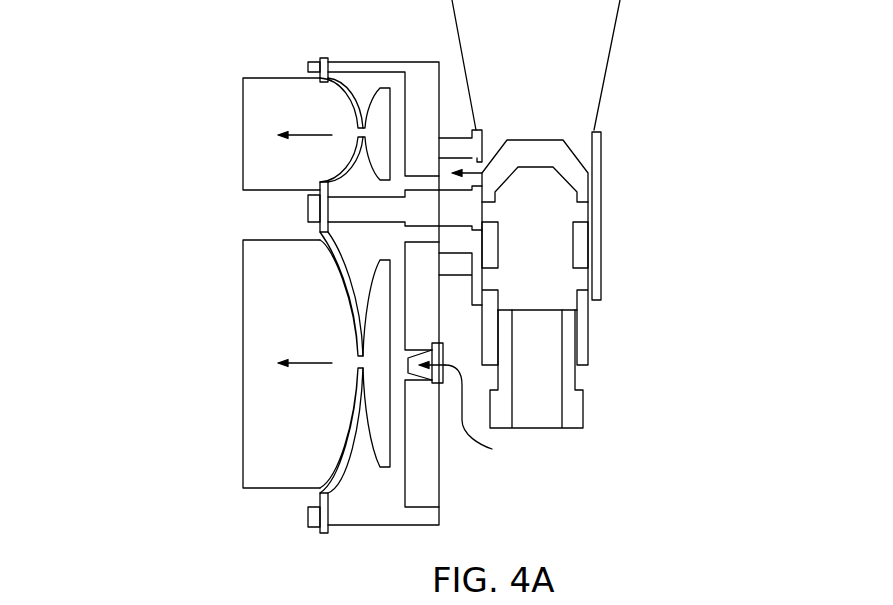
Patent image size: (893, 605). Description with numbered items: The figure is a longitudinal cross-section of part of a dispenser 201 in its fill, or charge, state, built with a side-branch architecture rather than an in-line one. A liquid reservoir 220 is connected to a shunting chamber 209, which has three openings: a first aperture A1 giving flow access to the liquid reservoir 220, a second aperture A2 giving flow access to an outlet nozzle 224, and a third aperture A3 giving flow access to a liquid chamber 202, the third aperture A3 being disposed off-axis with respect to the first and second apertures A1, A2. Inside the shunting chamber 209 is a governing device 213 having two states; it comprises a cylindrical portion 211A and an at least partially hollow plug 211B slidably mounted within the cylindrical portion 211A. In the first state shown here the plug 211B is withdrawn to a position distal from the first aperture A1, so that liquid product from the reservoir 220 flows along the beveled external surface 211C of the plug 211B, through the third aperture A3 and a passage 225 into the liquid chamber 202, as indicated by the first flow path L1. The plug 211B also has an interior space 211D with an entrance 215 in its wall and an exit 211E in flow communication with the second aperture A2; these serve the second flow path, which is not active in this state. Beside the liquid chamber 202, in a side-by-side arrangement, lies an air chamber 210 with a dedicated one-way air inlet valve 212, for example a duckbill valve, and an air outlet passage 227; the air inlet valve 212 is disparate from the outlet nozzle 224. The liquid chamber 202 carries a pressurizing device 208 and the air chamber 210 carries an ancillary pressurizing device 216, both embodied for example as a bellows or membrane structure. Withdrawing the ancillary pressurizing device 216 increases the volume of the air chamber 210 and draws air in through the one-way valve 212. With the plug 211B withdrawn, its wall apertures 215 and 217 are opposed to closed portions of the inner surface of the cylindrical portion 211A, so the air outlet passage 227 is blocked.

The dispenser 201 is at (714, 138).
The liquid chamber 202 is at (365, 80).
The pressurizing device 208 is at (328, 60).
The shunting chamber 209 is at (610, 261).
The air chamber 210 is at (362, 496).
The cylindrical portion 211A is at (598, 140).
The plug 211B is at (585, 237).
The external surface 211C is at (487, 165).
The interior space 211D is at (545, 234).
The exit 211E is at (528, 302).
The one-way air inlet valve 212 is at (438, 384).
The governing device 213 is at (533, 147).
The entrance 215 is at (491, 212).
The ancillary pressurizing device 216 is at (355, 452).
The aperture 217 is at (492, 281).
The liquid reservoir 220 is at (603, 44).
The outlet nozzle 224 is at (540, 418).
The passage 225 is at (447, 181).
The air outlet passage 227 is at (462, 242).
The first aperture A1 is at (565, 128).
The second aperture A2 is at (555, 305).
The third aperture A3 is at (481, 163).
The first flow path L1 is at (485, 160).